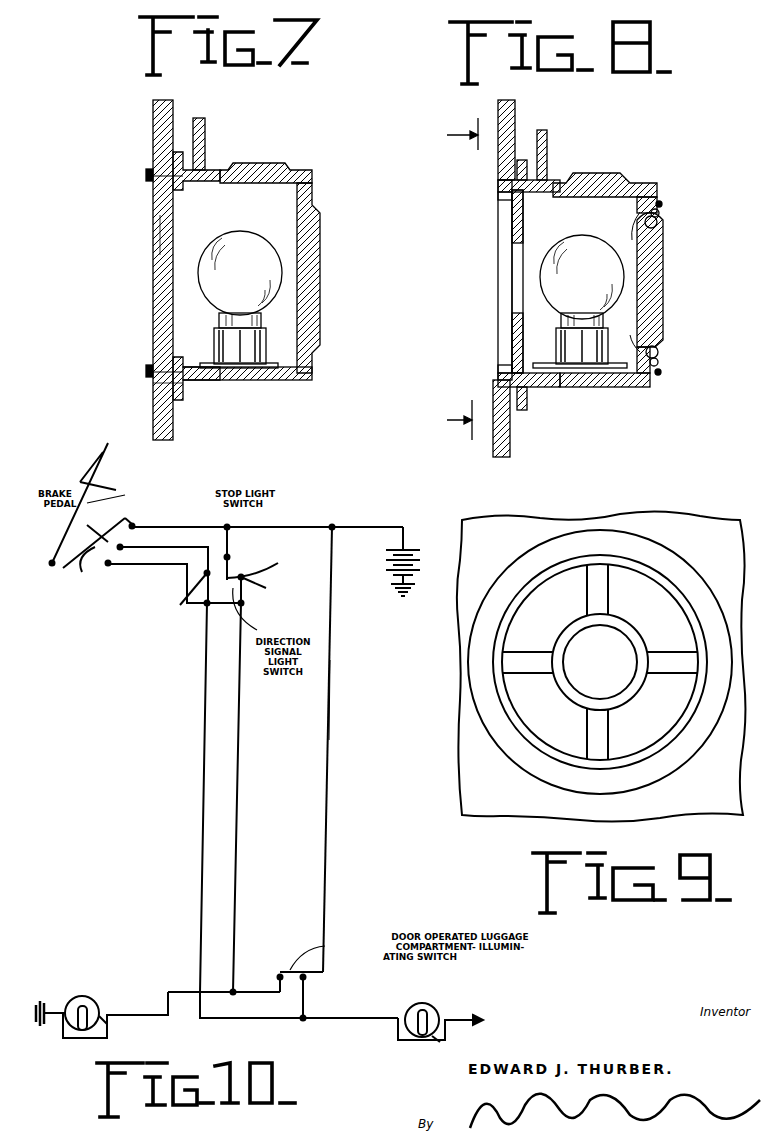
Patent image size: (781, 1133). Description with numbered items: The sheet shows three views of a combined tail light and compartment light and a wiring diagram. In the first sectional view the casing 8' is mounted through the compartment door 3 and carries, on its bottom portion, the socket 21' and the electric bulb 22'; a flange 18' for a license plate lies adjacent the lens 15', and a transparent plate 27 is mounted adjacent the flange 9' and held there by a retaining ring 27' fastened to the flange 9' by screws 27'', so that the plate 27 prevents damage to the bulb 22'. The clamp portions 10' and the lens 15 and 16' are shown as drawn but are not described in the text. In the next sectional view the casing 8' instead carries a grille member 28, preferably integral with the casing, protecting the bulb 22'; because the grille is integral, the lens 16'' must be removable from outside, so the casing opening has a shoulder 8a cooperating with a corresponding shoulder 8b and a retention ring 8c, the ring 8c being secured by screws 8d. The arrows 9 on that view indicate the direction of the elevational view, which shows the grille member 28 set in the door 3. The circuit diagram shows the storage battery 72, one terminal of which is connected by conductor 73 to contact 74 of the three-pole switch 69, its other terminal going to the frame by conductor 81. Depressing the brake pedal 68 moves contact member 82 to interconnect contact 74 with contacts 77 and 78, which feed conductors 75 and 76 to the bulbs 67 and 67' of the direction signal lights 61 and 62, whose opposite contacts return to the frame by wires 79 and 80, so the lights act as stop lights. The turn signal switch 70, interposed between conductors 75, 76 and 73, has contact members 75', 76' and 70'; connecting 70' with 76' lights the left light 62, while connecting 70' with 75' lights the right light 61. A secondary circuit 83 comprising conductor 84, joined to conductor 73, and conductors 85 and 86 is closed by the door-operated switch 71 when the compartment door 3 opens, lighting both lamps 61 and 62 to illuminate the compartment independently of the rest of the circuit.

In FIG. 7, the compartment door 3 is at (168, 110).
In FIG. 8, the compartment door 3 is at (512, 112).
In FIG. 9, the compartment door 3 is at (730, 553).
In FIG. 7, the clamp bracket 10' is at (165, 269).
In FIG. 8, the clamp bracket 10' is at (558, 275).
In FIG. 7, the transparent plate 27 is at (132, 235).
In FIG. 7, the retaining ring 27' is at (138, 274).
In FIG. 7, the screws 27'' is at (124, 259).
In FIG. 7, the flange 18' is at (225, 138).
In FIG. 8, the flange 18' is at (573, 141).
In FIG. 7, the lens 15' is at (266, 155).
In FIG. 7, the housing side wall 16' is at (335, 278).
In FIG. 7, the casing 8' is at (265, 368).
In FIG. 8, the casing 8' is at (621, 268).
In FIG. 7, the electric bulb 22' is at (240, 259).
In FIG. 8, the electric bulb 22' is at (582, 263).
In FIG. 7, the socket 21' is at (239, 364).
In FIG. 8, the socket 21' is at (580, 370).
In FIG. 7, the flange 9' is at (147, 398).
In FIG. 8, the flange 9' is at (487, 281).
In FIG. 8, the arrows 9— 9 is at (462, 273).
In FIG. 8, the grille member 28 is at (512, 230).
In FIG. 9, the grille member 28 is at (606, 600).
In FIG. 8, the housing top cover 15 is at (606, 165).
In FIG. 8, the lens 16'' is at (682, 280).
In FIG. 8, the shoulder 8a is at (641, 212).
In FIG. 8, the shoulder 8b is at (660, 224).
In FIG. 8, the retention ring 8c is at (660, 214).
In FIG. 8, the screws 8d is at (662, 204).
In FIG. 10, the contact member 82 is at (52, 567).
In FIG. 10, the three-pole switch 69 is at (92, 570).
In FIG. 10, the brake pedal 68 is at (134, 526).
In FIG. 10, the contact 74 is at (138, 526).
In FIG. 10, the conductor 73 is at (323, 526).
In FIG. 10, the storage battery 72 is at (418, 548).
In FIG. 10, the conductor 81 is at (394, 585).
In FIG. 10, the conductor 84 is at (327, 780).
In FIG. 10, the secondary circuit 83 is at (329, 700).
In FIG. 10, the turn signal switch 70 is at (252, 553).
In FIG. 10, the contact member 70' is at (272, 566).
In FIG. 10, the contact member 76' is at (271, 590).
In FIG. 10, the conductor 76 is at (221, 812).
In FIG. 10, the contact 77 is at (124, 546).
In FIG. 10, the contact member 75' is at (187, 608).
In FIG. 10, the contact 78 is at (112, 567).
In FIG. 10, the conductor 75 is at (279, 827).
In FIG. 10, the conductor 86 is at (245, 991).
In FIG. 10, the switch 71 is at (287, 970).
In FIG. 10, the conductor 85 is at (316, 1006).
In FIG. 10, the direction signal light 61 is at (427, 1010).
In FIG. 10, the electric bulb 67 is at (426, 1053).
In FIG. 10, the wire 79 is at (467, 1016).
In FIG. 10, the direction signal light 62 is at (86, 1000).
In FIG. 10, the electric bulb 67' is at (120, 1030).
In FIG. 10, the wire 80 is at (48, 1027).